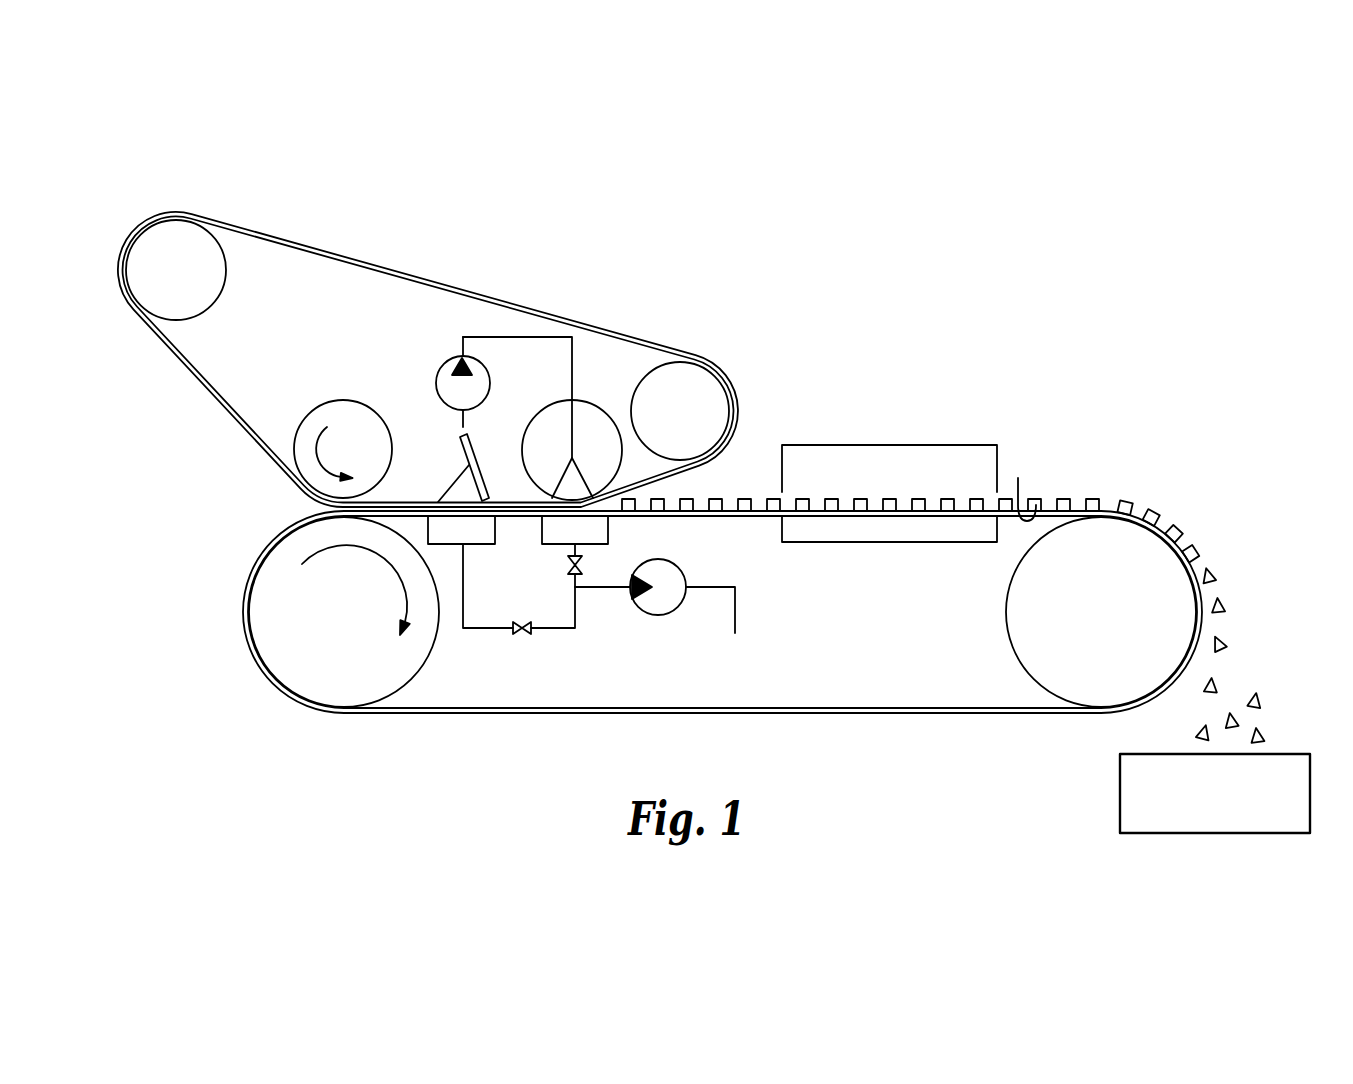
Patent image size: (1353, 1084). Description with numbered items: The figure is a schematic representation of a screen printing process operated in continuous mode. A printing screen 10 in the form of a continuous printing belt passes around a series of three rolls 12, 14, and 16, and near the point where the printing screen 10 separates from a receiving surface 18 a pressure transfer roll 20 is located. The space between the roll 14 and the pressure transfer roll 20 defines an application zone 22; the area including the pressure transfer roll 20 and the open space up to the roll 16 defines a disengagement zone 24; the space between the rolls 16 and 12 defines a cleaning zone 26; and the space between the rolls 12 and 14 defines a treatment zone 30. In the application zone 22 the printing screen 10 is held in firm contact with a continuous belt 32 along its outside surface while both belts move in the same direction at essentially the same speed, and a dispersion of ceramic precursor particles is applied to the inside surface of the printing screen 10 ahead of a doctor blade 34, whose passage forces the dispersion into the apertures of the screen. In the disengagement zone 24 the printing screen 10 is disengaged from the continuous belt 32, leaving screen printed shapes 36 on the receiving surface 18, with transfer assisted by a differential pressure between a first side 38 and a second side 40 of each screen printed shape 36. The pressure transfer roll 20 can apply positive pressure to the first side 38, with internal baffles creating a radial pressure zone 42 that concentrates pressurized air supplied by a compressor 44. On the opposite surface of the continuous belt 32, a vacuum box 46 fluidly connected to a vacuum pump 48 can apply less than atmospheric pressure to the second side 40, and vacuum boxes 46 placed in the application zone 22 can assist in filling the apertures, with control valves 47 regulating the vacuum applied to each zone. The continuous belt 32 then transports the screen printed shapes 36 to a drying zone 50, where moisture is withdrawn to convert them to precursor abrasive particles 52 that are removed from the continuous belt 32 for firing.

The printing screen 10 is at (387, 270).
The roll 12 is at (180, 230).
The roll 14 is at (307, 462).
The roll 16 is at (713, 395).
The receiving surface 18 is at (277, 537).
The pressure transfer roll 20 is at (590, 412).
The application zone 22 is at (422, 474).
The disengagement zone 24 is at (645, 456).
The cleaning zone 26 is at (526, 276).
The treatment zone 30 is at (184, 403).
The continuous belt 32 is at (587, 712).
The doctor blade 34 is at (472, 445).
The screen printed shapes 36 is at (720, 497).
The first side 38 is at (1063, 495).
The second side 40 is at (1022, 486).
The radial pressure zone 42 is at (570, 477).
The compressor 44 is at (437, 377).
The vacuum box 46 is at (547, 532).
The control valves 47 is at (525, 635).
The vacuum pump 48 is at (662, 602).
The drying zone 50 is at (958, 450).
The precursor abrasive particles 52 is at (1231, 641).